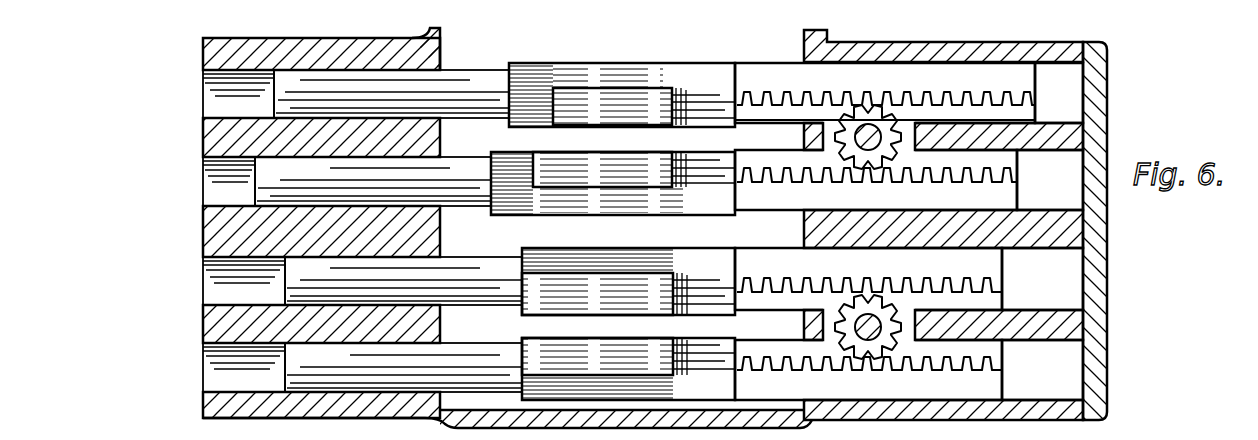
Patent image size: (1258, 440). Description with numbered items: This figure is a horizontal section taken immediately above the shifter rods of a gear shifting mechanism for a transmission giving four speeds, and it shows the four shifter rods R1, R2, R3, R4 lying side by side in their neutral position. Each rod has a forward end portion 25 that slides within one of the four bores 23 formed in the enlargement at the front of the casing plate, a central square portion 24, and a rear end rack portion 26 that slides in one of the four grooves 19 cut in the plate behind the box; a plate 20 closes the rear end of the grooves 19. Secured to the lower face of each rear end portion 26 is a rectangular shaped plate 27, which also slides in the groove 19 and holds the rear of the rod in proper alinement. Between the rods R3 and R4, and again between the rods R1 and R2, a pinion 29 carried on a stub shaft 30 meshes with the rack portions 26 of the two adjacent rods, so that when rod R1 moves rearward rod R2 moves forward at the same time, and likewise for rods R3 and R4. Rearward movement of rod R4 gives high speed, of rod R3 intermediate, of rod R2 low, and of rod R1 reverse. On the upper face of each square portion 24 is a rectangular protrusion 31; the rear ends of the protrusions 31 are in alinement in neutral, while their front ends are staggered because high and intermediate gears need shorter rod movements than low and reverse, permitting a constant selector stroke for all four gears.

The grooves 19 is at (1073, 103).
The plate 20 is at (1105, 372).
The bores 23 is at (217, 176).
The central square portion 24 is at (553, 73).
The forward end portion 25 is at (452, 86).
The rear end rack portion 26 is at (874, 78).
The rectangular shaped plate 27 is at (1059, 93).
The pinion 29 is at (900, 120).
The stub shaft 30 is at (873, 128).
The protrusion 31 is at (592, 100).
The shifter rod R1 is at (480, 352).
The shifter rod R2 is at (532, 258).
The shifter rod R3 is at (697, 160).
The shifter rod R4 is at (690, 73).